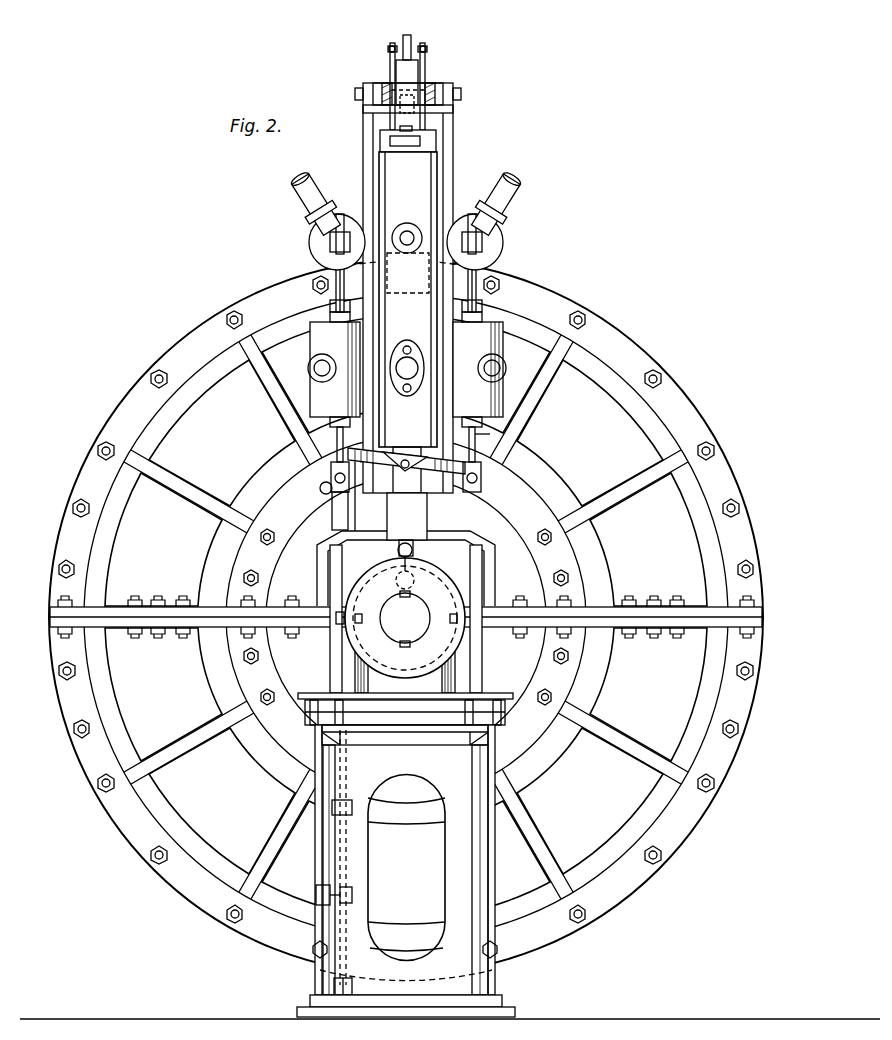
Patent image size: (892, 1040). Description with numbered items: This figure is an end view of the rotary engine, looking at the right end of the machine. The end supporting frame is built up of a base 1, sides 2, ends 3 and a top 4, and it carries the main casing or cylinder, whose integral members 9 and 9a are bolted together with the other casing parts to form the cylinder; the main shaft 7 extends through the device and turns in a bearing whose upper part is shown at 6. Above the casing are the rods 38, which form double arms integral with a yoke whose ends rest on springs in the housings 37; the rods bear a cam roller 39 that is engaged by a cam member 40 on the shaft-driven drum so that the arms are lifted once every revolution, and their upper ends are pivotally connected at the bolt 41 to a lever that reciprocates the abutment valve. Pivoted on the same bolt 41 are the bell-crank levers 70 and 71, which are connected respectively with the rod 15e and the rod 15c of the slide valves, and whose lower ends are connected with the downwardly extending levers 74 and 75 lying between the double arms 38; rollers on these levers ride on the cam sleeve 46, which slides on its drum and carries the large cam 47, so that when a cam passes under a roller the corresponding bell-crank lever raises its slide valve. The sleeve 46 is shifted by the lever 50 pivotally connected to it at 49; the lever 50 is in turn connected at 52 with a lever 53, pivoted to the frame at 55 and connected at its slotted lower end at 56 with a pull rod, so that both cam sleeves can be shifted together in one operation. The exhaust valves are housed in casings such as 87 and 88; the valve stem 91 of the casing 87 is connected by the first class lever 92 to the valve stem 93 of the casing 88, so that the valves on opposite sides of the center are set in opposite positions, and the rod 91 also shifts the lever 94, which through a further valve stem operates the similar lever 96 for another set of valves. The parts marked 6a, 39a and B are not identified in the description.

The base 1 is at (410, 1008).
The sides 2 is at (316, 853).
The ends 3 is at (406, 981).
The tops 4 is at (381, 698).
The upper part of the bearing 6 is at (398, 599).
The frame cross piece 6a is at (440, 558).
The main shaft 7 is at (405, 618).
The integral members 9 is at (406, 677).
The integral members 9a is at (406, 617).
The rod 15c is at (392, 49).
The rod 15e is at (425, 50).
The housings 37 is at (350, 670).
The rods 38 is at (364, 160).
The cam roller 39 is at (424, 573).
The pointer 39a is at (405, 460).
The cam member 40 is at (380, 576).
The bolt 41 is at (355, 93).
The sleeve 46 is at (406, 646).
The large cam 47 is at (453, 618).
The pivotal connection 49 is at (338, 624).
The lever 50 is at (333, 481).
The pivotal connection 52 is at (346, 800).
The lever 53 is at (345, 863).
The pivot 55 is at (352, 895).
The pivotal connection 56 is at (345, 984).
The bell-crank lever 70 is at (426, 79).
The bell-crank lever 71 is at (390, 69).
The downwardly extending lever 74 is at (381, 224).
The downwardly extending lever 75 is at (436, 163).
The valve casing 87 is at (312, 352).
The valve casing 88 is at (503, 352).
The valve stem 91 is at (336, 296).
The first class lever 92 is at (463, 475).
The valve stem 93 is at (490, 434).
The lever 94 is at (333, 243).
The lever 96 is at (430, 496).
The port B is at (407, 229).